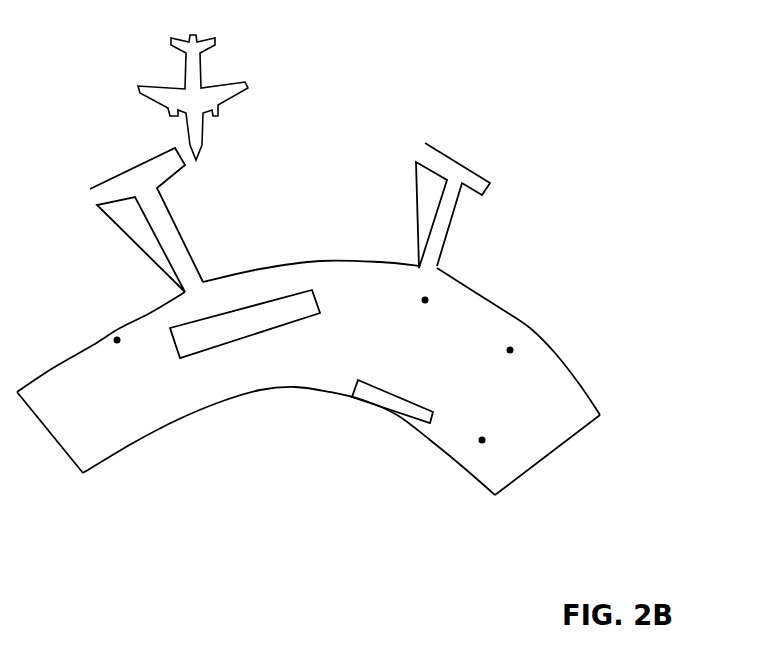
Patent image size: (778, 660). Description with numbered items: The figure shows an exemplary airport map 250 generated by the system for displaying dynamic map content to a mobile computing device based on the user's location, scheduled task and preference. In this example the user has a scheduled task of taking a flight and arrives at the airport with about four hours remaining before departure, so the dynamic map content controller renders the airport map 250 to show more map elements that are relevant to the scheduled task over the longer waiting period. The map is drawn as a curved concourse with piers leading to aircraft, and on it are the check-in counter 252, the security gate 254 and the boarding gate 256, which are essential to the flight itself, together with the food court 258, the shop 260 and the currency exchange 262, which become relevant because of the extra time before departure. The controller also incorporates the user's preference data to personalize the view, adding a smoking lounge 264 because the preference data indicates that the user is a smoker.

The airport map 250 is at (355, 112).
The check-in counter 252 is at (430, 423).
The security gate 254 is at (287, 293).
The boarding gate 256 is at (172, 148).
The food court 258 is at (446, 306).
The shop 260 is at (508, 453).
The currency exchange 262 is at (530, 350).
The smoking lounge 264 is at (117, 339).